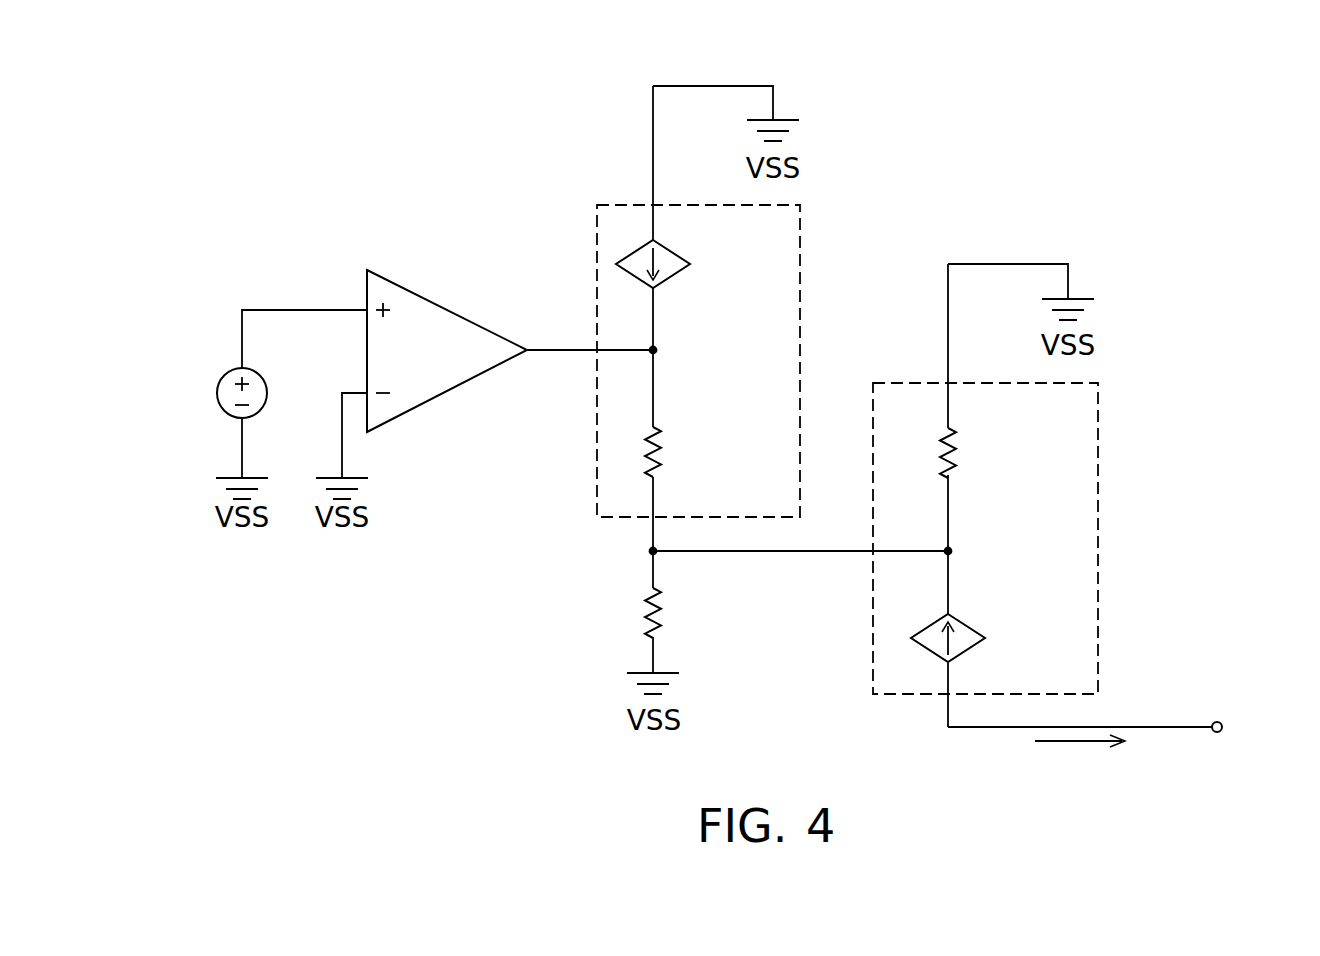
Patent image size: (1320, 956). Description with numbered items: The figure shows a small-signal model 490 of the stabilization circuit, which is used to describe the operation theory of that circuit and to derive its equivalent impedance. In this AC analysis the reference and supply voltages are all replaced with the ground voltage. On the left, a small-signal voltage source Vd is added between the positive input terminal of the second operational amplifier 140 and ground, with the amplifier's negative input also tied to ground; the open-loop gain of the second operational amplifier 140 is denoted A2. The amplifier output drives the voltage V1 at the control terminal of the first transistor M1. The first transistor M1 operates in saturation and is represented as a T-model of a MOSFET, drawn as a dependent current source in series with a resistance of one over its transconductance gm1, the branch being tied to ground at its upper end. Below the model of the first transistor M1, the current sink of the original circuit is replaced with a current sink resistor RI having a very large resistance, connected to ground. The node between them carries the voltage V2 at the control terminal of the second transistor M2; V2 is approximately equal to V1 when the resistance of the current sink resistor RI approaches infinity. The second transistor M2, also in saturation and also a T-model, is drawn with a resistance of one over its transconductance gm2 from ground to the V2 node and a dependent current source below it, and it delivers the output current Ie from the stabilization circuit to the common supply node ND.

The small-signal model 490 is at (222, 92).
The second operational amplifier 140 is at (447, 351).
The open-loop gain A2 is at (441, 352).
The small-signal voltage source Vd is at (217, 393).
The voltage at the control terminal of the first transistor V1 is at (660, 351).
The voltage at the control terminal of the second transistor V2 is at (955, 551).
The first transistor M1 is at (655, 318).
The second transistor M2 is at (1030, 495).
The transconductance of the first transistor gm1 is at (662, 447).
The transconductance of the second transistor gm2 is at (957, 448).
The current sink resistor RI is at (662, 607).
The common supply node ND is at (1109, 727).
The output current Ie is at (1080, 757).